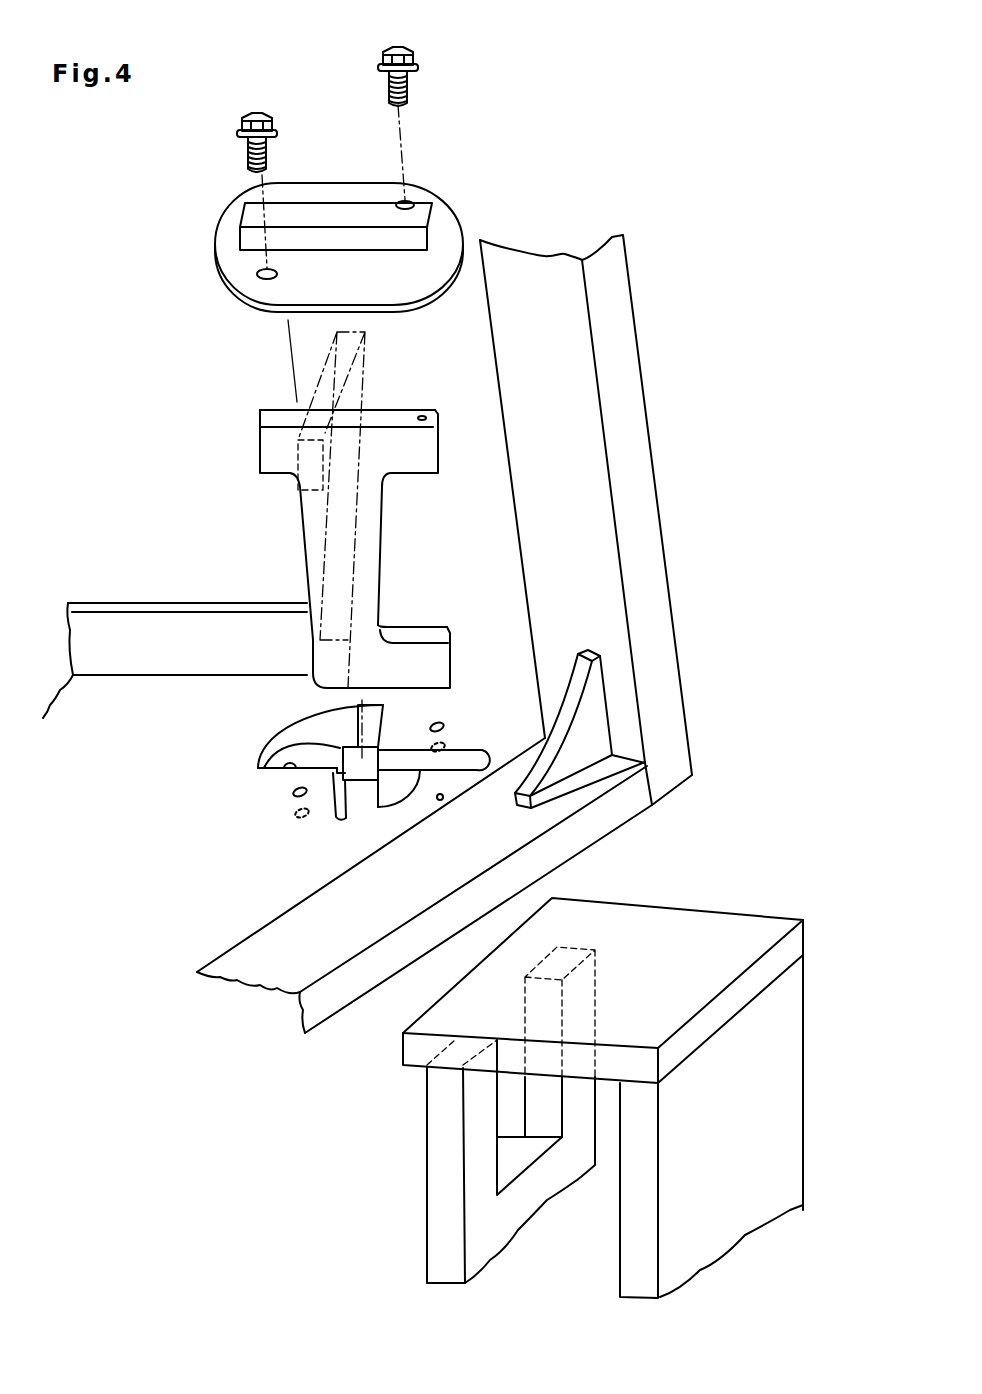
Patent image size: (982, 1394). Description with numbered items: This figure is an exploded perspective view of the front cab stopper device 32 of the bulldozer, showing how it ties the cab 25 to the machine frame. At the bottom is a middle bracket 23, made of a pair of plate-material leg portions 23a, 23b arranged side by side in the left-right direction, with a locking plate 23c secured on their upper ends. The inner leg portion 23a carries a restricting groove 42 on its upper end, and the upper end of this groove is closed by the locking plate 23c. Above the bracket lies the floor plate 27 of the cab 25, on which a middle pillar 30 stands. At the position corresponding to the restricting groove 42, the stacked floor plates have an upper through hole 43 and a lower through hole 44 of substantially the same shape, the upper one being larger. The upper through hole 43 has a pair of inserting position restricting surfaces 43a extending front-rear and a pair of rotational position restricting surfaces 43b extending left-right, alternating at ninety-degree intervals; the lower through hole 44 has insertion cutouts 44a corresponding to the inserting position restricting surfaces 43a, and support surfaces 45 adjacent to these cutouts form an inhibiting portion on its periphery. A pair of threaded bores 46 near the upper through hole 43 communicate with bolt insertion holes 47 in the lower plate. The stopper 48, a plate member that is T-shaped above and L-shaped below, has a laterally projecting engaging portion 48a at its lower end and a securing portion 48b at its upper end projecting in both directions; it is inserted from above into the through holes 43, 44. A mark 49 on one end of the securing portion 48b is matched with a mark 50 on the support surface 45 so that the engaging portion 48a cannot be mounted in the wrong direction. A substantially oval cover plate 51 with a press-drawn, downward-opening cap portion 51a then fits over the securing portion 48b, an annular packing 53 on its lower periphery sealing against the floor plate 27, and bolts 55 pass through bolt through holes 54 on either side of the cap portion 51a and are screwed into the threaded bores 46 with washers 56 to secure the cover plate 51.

The middle bracket 23 is at (615, 1086).
The leg portion 23a is at (432, 1222).
The leg portion 23b is at (797, 1112).
The locking plate 23c is at (737, 915).
The cab 25 is at (656, 490).
The floor plate 27 is at (217, 953).
The middle pillar 30 is at (649, 546).
The front cab stopper device 32 is at (326, 504).
The restricting groove 42 is at (503, 1137).
The upper through hole 43 is at (359, 757).
The inserting position restricting surface 43a is at (380, 706).
The rotational position restricting surface 43b is at (283, 768).
The lower through hole 44 is at (290, 726).
The insertion cutout 44a is at (372, 745).
The support surface 45 is at (297, 752).
The threaded bore 46 is at (294, 793).
The bolt insertion hole 47 is at (298, 816).
The stopper 48 is at (298, 490).
The engaging portion 48a is at (427, 628).
The securing portion 48b is at (368, 358).
The mark 49 is at (423, 416).
The mark 50 is at (440, 801).
The cover plate 51 is at (308, 238).
The cap portion 51a is at (243, 238).
The packing 53 is at (232, 292).
The bolt through hole 54 is at (410, 202).
The bolt 55 is at (413, 49).
The washer 56 is at (418, 68).